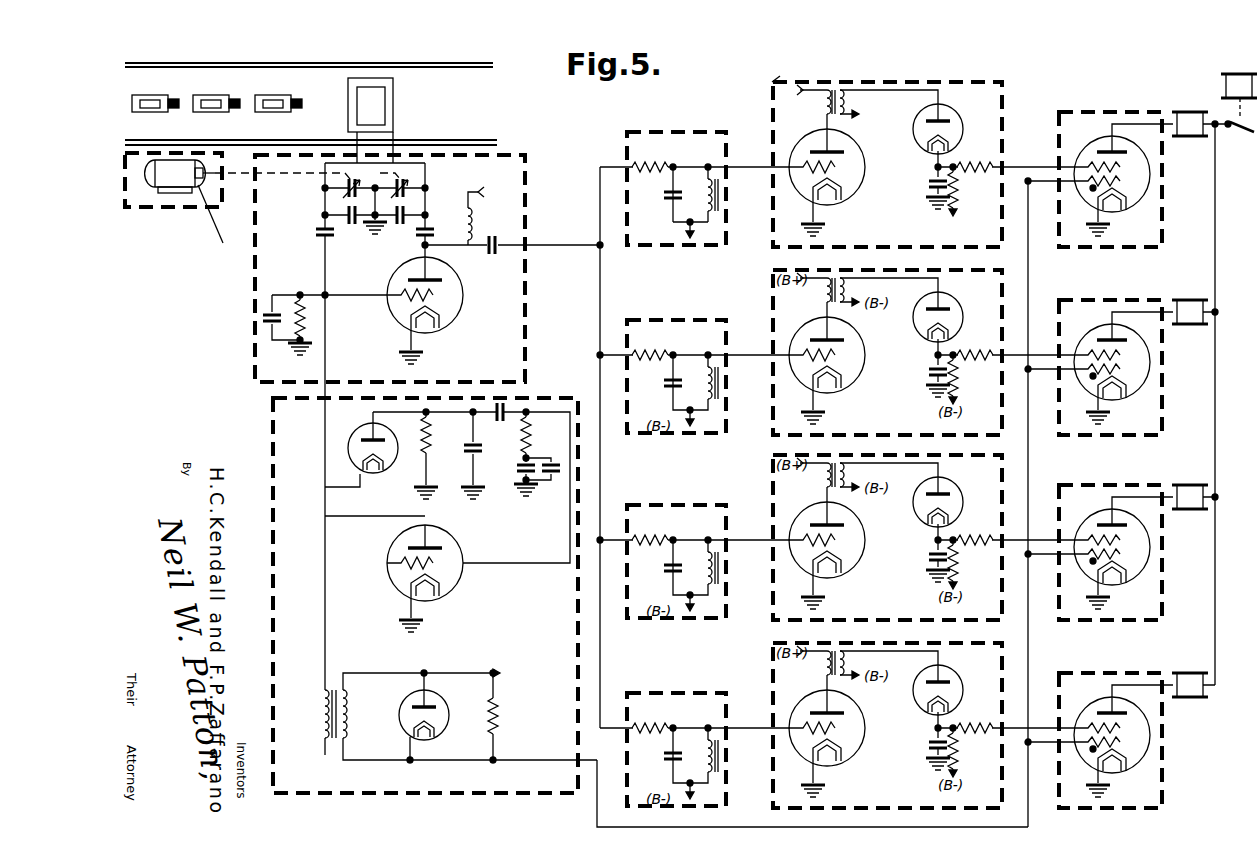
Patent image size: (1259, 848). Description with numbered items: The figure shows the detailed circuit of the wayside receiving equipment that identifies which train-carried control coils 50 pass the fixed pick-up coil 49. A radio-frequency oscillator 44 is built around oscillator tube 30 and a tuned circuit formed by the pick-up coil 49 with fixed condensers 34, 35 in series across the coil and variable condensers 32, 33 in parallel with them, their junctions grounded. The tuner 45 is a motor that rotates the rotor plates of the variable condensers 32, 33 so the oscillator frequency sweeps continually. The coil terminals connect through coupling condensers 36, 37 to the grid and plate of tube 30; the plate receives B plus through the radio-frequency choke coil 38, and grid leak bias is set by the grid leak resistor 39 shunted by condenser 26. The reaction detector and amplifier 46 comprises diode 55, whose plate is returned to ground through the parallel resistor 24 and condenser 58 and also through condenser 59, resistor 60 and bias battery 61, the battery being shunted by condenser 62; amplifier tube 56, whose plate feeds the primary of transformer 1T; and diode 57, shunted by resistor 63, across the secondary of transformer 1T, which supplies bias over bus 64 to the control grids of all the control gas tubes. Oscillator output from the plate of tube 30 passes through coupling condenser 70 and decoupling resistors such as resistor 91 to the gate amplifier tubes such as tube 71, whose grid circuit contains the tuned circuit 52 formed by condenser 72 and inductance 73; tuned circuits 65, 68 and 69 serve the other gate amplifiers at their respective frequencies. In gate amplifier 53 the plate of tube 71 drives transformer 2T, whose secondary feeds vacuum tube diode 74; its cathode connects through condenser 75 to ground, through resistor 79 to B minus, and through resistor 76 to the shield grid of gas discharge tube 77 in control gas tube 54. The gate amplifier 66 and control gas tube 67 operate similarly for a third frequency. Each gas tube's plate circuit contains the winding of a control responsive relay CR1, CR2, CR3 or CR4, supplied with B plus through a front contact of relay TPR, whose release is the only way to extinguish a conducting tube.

The resistor 24 is at (435, 455).
The condenser 26 is at (281, 324).
The oscillator tube 30 is at (463, 295).
The variable condenser 32 is at (361, 196).
The variable condenser 33 is at (410, 196).
The fixed condenser 34 is at (353, 229).
The fixed condenser 35 is at (404, 229).
The coupling condenser 36 is at (322, 236).
The coupling condenser 37 is at (436, 222).
The radio-frequency choke coil 38 is at (470, 212).
The grid leak resistor 39 is at (308, 325).
The oscillator 44 is at (525, 156).
The tuner 45 is at (259, 228).
The reaction detector and amplifier 46 is at (552, 793).
The fixed pick-up coil 49 is at (385, 100).
The train-carried control coils 50 is at (235, 93).
The tuned circuit 52 is at (732, 206).
The gate amplifier 53 is at (1002, 128).
The control gas tube 54 is at (1162, 218).
The diode 55 is at (358, 437).
The amplifier tube 56 is at (452, 581).
The diode 57 is at (402, 706).
The condenser 58 is at (462, 455).
The condenser 59 is at (499, 422).
The resistor 60 is at (539, 436).
The bias battery 61 is at (518, 468).
The condenser 62 is at (548, 476).
The resistor 63 is at (488, 716).
The bus 64 is at (597, 798).
The tuned circuit 65 is at (726, 399).
The gate amplifier 66 is at (1002, 510).
The control gas tube 67 is at (1082, 485).
The tuned circuit 68 is at (726, 584).
The tuned circuit 69 is at (724, 774).
The coupling condenser 70 is at (512, 237).
The gate amplifier tube 71 is at (843, 164).
The condenser 72 is at (663, 195).
The inductance 73 is at (705, 180).
The vacuum tube diode 74 is at (953, 120).
The condenser 75 is at (928, 188).
The resistor 76 is at (1006, 156).
The gas discharge tube 77 is at (1137, 145).
The resistor 79 is at (963, 199).
The decoupling resistor 91 is at (650, 157).
The transformer 1T is at (333, 690).
The transformer 2T is at (825, 112).
The control responsive relay CR1 is at (1190, 113).
The control responsive relay CR2 is at (1121, 357).
The control responsive relay CR3 is at (1189, 474).
The control responsive relay CR4 is at (1120, 730).
The relay TPR is at (1239, 91).